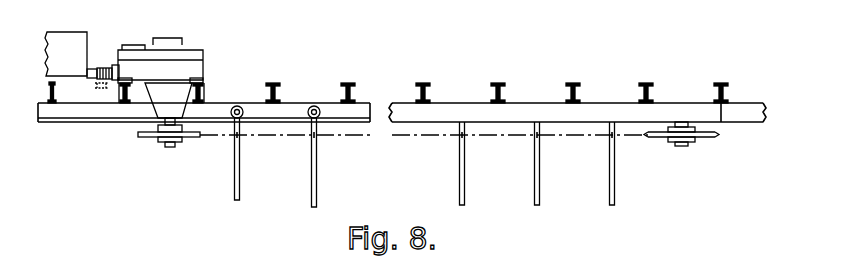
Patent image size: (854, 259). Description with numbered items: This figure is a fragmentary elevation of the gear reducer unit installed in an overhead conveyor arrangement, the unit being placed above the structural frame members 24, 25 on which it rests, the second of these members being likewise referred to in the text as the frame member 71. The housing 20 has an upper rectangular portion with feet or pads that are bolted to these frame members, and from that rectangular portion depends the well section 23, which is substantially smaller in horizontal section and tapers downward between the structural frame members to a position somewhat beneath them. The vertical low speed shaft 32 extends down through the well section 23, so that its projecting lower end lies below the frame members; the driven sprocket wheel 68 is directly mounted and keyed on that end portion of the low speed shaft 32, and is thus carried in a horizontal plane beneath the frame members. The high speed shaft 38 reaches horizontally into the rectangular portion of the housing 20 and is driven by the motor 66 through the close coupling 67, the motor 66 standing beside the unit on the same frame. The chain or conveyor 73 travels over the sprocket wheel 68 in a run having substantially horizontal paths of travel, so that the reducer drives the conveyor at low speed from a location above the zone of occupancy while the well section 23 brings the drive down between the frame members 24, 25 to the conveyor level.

The housing 20 is at (217, 68).
The well section 23 is at (170, 100).
The structural frame member 24 is at (118, 100).
The structural frame member 25 is at (203, 83).
The low speed shaft 32 is at (169, 147).
The high speed shaft 38 is at (109, 67).
The motor 66 is at (66, 67).
The close coupling 67 is at (98, 88).
The sprocket wheel 68 is at (140, 137).
The structural frame member 71 is at (99, 127).
The chain or conveyor 73 is at (273, 137).